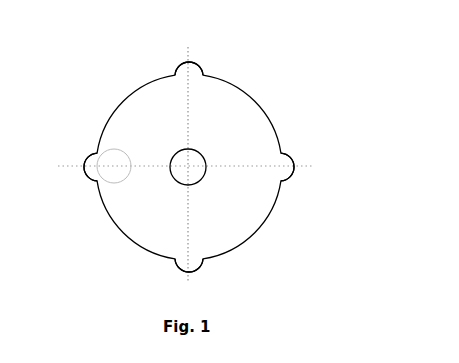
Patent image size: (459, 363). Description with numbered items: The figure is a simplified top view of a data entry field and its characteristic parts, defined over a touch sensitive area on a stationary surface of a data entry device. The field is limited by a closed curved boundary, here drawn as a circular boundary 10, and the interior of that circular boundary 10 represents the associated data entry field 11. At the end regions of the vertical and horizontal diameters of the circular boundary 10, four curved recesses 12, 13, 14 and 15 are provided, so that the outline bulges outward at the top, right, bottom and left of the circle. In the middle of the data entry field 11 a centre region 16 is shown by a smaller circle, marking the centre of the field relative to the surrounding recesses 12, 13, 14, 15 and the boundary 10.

The circular boundary 10 is at (251, 98).
The data entry field 11 is at (134, 218).
The curved recess 12 is at (190, 62).
The curved recess 13 is at (294, 162).
The curved recess 14 is at (201, 261).
The curved recess 15 is at (86, 167).
The centre region 16 is at (175, 155).